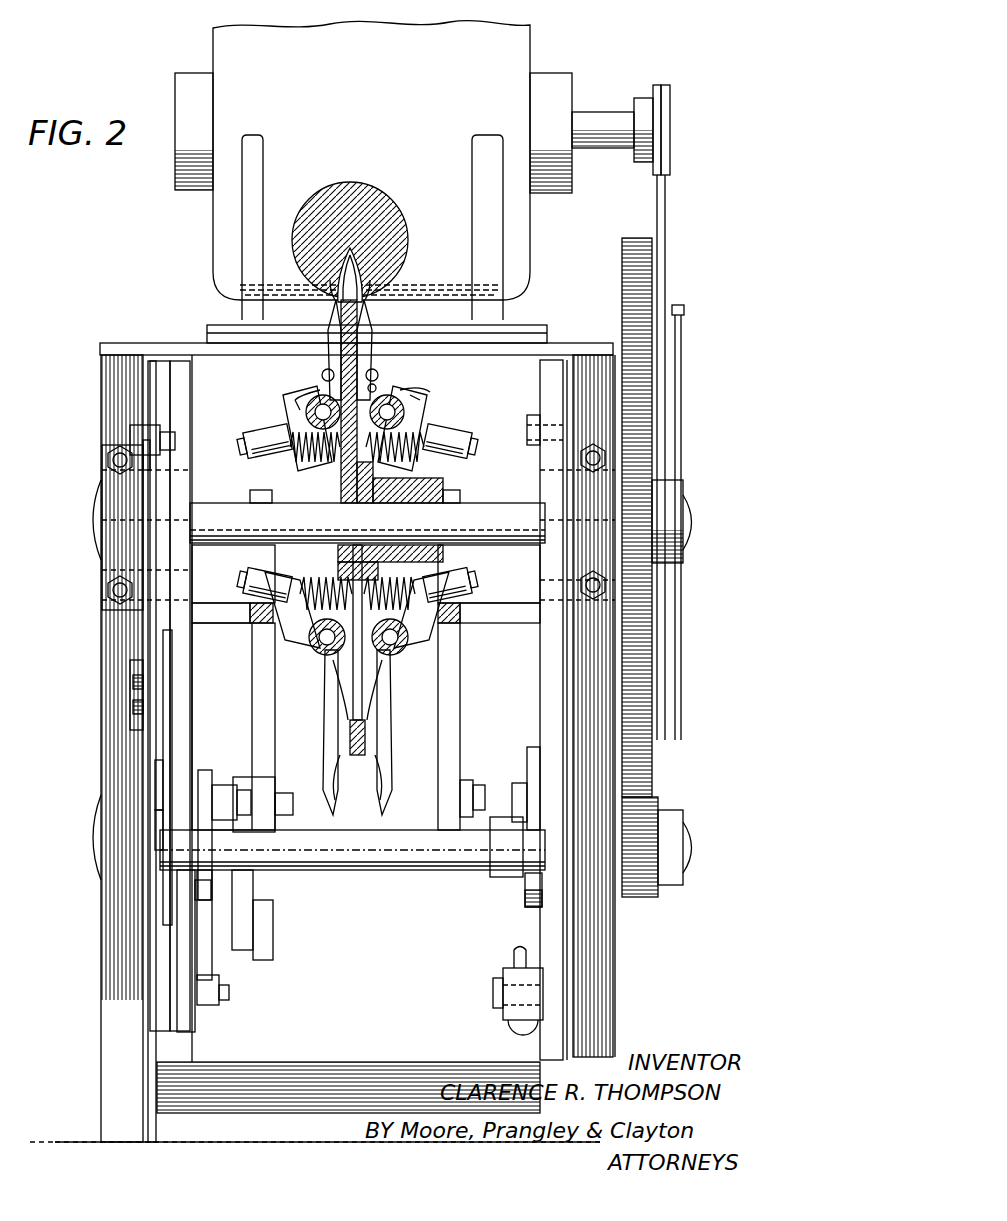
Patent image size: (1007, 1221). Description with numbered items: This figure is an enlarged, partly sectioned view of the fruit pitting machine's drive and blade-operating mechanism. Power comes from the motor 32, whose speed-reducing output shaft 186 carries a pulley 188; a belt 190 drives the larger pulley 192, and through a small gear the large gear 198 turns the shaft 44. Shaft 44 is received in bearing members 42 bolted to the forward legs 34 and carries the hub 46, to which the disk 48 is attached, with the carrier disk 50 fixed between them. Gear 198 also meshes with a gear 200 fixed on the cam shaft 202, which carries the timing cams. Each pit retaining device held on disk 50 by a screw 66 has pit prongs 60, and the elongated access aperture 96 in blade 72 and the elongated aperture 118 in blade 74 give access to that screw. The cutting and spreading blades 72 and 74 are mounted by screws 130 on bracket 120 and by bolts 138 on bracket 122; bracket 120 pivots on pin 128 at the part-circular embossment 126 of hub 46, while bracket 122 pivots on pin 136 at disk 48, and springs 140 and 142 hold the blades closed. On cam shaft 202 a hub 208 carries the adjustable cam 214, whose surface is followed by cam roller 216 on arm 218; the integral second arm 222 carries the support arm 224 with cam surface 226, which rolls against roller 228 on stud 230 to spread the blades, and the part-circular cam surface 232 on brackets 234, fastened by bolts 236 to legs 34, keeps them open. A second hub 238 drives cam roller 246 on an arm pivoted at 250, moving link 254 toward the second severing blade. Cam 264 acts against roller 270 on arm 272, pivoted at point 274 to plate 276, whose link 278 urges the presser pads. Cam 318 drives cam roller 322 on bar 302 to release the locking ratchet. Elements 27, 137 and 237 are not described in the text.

The motor 32 is at (548, 51).
The shaft 186 is at (612, 118).
The pulley 188 is at (672, 134).
The belt 190 is at (665, 228).
The larger pulley 192 is at (681, 386).
The large gear 198 is at (630, 268).
The gear 200 is at (645, 897).
The elongated aperture 118 is at (207, 336).
The base plate 27 is at (240, 316).
The forward legs 34 is at (101, 742).
The bearing members 42 is at (101, 462).
The pivot 250 is at (190, 460).
The plate 276 is at (160, 452).
The shaft 44 is at (490, 520).
The cam shaft 202 is at (392, 870).
The pit prongs 60 is at (318, 270).
The disk 48 is at (341, 485).
The cutting and spreading blade 74 is at (323, 365).
The cutting and spreading blade 72 is at (380, 361).
The elongated access aperture 96 is at (365, 345).
The screw 66 is at (375, 350).
The disk 50 is at (378, 368).
The bolts 138 is at (328, 378).
The screws 130 is at (378, 380).
The pin 136 is at (320, 388).
The lever arm 137 is at (285, 398).
The part-circular embossment 126 is at (420, 390).
The pin 128 is at (420, 400).
The bracket 122 is at (283, 416).
The bracket 120 is at (428, 414).
The spring 142 is at (355, 457).
The spring 140 is at (400, 481).
The hub 46 is at (446, 481).
The stud 230 is at (270, 448).
The roller 228 is at (265, 470).
The cam surface 232 is at (262, 623).
The cam surface 226 is at (255, 558).
The brackets 234 is at (505, 622).
The pad 237 is at (215, 612).
The support arm 224 is at (265, 694).
The arm 272 is at (215, 775).
The second hub 238 is at (220, 785).
The arm 218 is at (273, 920).
The cam roller 216 is at (273, 958).
The cam 214 is at (260, 898).
The hub 208 is at (280, 878).
The cam roller 246 is at (215, 905).
The link 254 is at (210, 1010).
The cam 318 is at (170, 930).
The bar 302 is at (155, 780).
The cam roller 322 is at (160, 805).
The bolts 236 is at (135, 668).
The second arm 222 is at (470, 780).
The roller 270 is at (525, 875).
The cam 264 is at (532, 907).
The link 278 is at (510, 1008).
The pivot point 274 is at (530, 420).